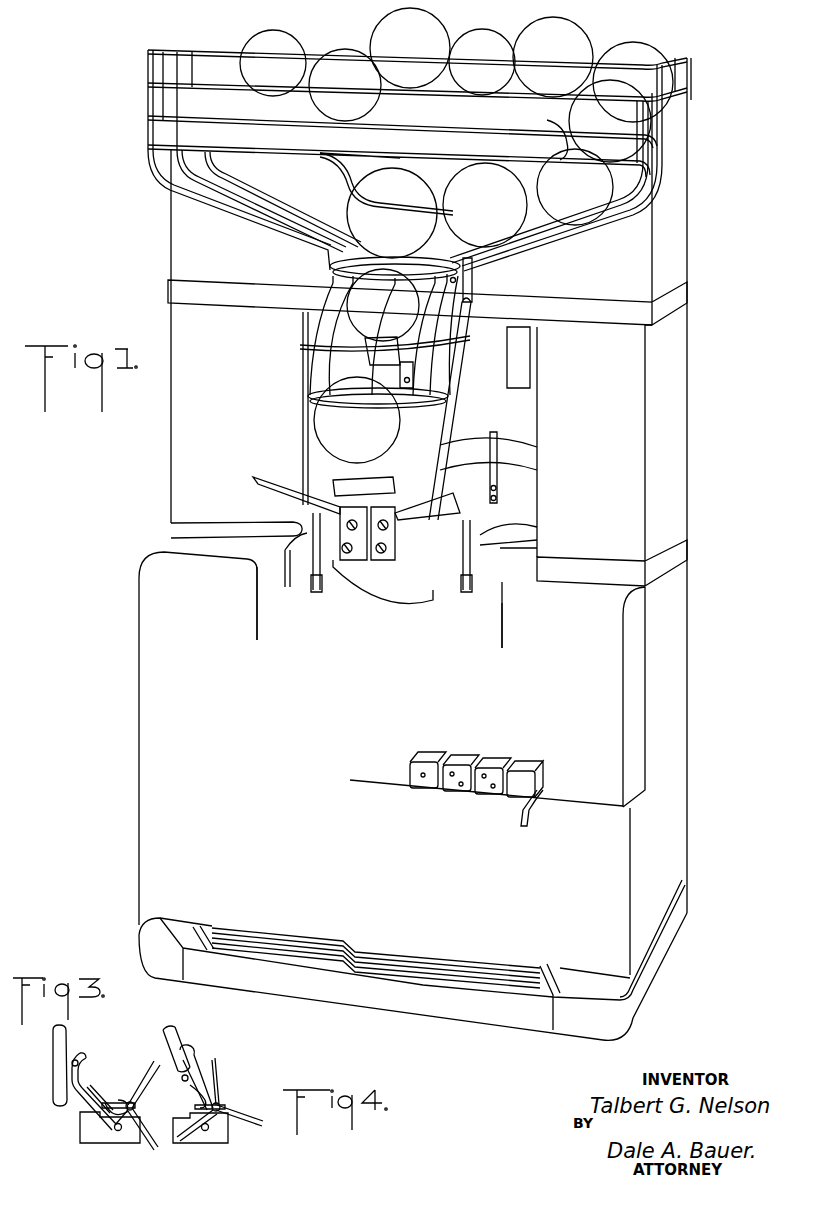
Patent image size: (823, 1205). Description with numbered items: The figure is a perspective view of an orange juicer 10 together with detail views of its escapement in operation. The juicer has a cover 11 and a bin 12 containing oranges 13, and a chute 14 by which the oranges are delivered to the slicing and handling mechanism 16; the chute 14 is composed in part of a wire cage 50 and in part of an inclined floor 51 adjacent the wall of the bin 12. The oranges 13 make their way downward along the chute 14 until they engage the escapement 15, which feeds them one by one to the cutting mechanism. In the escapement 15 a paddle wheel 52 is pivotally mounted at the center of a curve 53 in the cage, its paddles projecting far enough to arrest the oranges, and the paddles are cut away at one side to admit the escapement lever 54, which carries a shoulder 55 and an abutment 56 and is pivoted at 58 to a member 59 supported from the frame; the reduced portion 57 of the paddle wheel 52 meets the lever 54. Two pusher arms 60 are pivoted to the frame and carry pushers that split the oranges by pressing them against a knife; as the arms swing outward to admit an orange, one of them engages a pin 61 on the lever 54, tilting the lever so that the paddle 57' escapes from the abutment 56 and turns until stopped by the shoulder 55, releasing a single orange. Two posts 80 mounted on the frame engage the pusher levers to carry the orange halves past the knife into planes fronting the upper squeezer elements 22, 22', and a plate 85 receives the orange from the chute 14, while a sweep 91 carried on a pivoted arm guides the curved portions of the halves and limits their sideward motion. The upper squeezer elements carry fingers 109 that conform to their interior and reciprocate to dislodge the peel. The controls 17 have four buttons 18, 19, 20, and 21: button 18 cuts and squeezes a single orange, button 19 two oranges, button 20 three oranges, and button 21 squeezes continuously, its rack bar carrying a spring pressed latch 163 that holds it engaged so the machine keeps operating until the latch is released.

In FIG. 1, the orange juicer 10 is at (176, 830).
In FIG. 1, the cover 11 is at (689, 164).
In FIG. 1, the bin 12 is at (215, 80).
In FIG. 1, the oranges 13 is at (273, 43).
In FIG. 1, the chute 14 is at (549, 236).
In FIG. 1, the escapement 15 is at (363, 342).
In FIG. 1, the slicing and handling mechanism 16 is at (355, 567).
In FIG. 1, the controls 17 is at (405, 770).
In FIG. 1, the button 18 is at (423, 782).
In FIG. 1, the button 19 is at (458, 788).
In FIG. 1, the button 20 is at (487, 790).
In FIG. 1, the button 21 is at (517, 800).
In FIG. 1, the upper squeezer element 22 is at (511, 445).
In FIG. 1, the upper squeezer element 22' is at (544, 536).
In FIG. 1, the wire cage 50 is at (632, 206).
In FIG. 1, the inclined floor 51 is at (547, 120).
In FIG. 3, the paddle wheel 52 is at (155, 1063).
In FIG. 4, the paddle wheel 52 is at (214, 1068).
In FIG. 1, the curve 53 is at (305, 413).
In FIG. 3, the escapement lever 54 is at (88, 1086).
In FIG. 4, the escapement lever 54 is at (193, 1103).
In FIG. 3, the shoulder 55 is at (113, 1102).
In FIG. 4, the shoulder 55 is at (198, 1085).
In FIG. 3, the abutment 56 is at (128, 1132).
In FIG. 4, the abutment 56 is at (228, 1130).
In FIG. 3, the reduced portion 57 is at (138, 1092).
In FIG. 4, the reduced portion 57 is at (240, 1103).
In FIG. 3, the paddle 57' is at (145, 1106).
In FIG. 4, the paddle 57' is at (203, 1142).
In FIG. 3, the pivot 58 is at (116, 1131).
In FIG. 4, the pivot 58 is at (201, 1131).
In FIG. 3, the member 59 is at (82, 1127).
In FIG. 1, the pusher arm 60 is at (306, 460).
In FIG. 3, the pusher arm 60 is at (53, 1037).
In FIG. 4, the pusher arm 60 is at (174, 1032).
In FIG. 1, the pin 61 is at (461, 348).
In FIG. 3, the pin 61 is at (78, 1058).
In FIG. 4, the pin 61 is at (190, 1050).
In FIG. 1, the post 80 is at (315, 560).
In FIG. 1, the plate 85 is at (372, 590).
In FIG. 1, the sweep 91 is at (513, 528).
In FIG. 1, the finger 109 is at (498, 463).
In FIG. 1, the spring pressed latch 163 is at (530, 816).